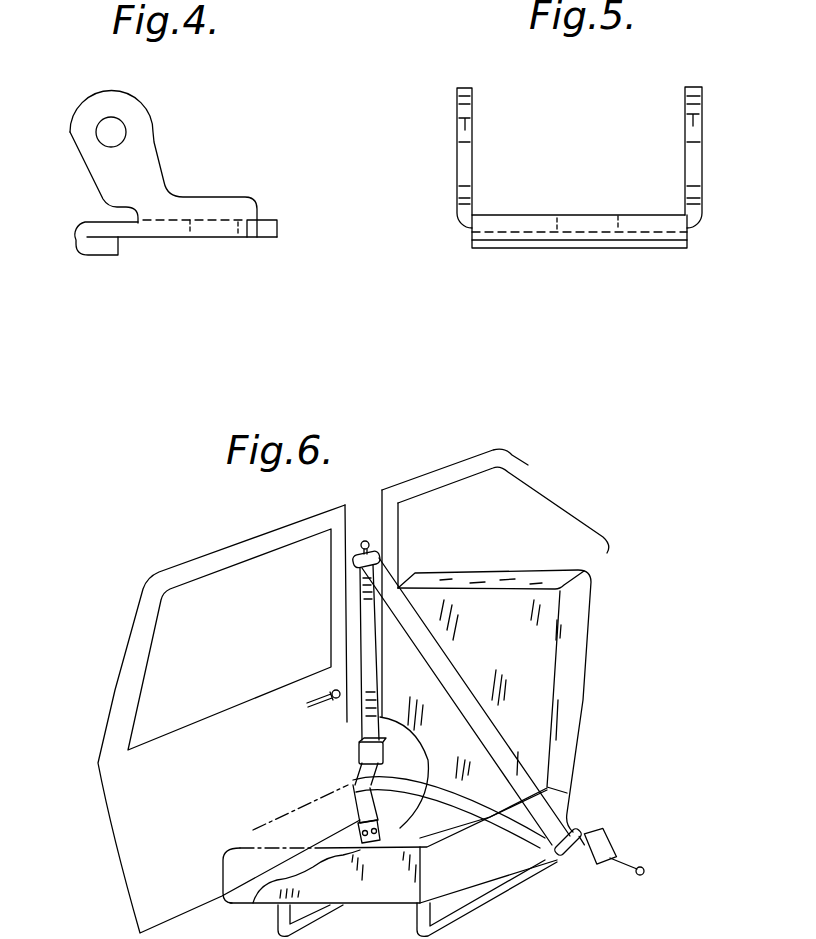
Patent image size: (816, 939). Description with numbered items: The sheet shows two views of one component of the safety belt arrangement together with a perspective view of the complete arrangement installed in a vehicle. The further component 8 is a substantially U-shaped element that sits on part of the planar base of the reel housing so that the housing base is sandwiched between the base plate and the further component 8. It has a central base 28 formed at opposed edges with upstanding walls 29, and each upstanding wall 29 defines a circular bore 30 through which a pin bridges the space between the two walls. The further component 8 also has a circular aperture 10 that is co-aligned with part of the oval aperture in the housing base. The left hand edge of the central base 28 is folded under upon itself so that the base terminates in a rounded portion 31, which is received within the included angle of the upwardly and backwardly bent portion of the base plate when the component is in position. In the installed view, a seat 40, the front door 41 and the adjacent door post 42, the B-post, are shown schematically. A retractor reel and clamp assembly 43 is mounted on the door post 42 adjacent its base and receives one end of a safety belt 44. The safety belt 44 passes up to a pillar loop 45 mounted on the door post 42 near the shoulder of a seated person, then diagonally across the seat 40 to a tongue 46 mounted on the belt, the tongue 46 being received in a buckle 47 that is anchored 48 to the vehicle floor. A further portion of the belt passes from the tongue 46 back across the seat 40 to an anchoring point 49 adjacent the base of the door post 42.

In FIG. 4, the further component 8 is at (163, 184).
In FIG. 5, the further component 8 is at (578, 165).
In FIG. 4, the circular aperture 10 is at (238, 232).
In FIG. 5, the circular aperture 10 is at (557, 223).
In FIG. 4, the central base 28 is at (270, 220).
In FIG. 4, the upstanding walls 29 is at (135, 160).
In FIG. 5, the upstanding walls 29 is at (465, 170).
In FIG. 4, the circular bore 30 is at (101, 133).
In FIG. 5, the circular bore 30 is at (465, 118).
In FIG. 4, the rounded portion 31 is at (76, 240).
In FIG. 5, the rounded portion 31 is at (585, 240).
In FIG. 6, the seat 40 is at (535, 670).
In FIG. 6, the front door 41 is at (215, 588).
In FIG. 6, the door post 42 is at (363, 541).
In FIG. 6, the retractor reel and clamp assembly 43 is at (357, 758).
In FIG. 6, the safety belt 44 is at (372, 707).
In FIG. 6, the pillar loop 45 is at (387, 546).
In FIG. 6, the tongue 46 is at (585, 821).
In FIG. 6, the buckle 47 is at (598, 849).
In FIG. 6, the anchor 48 is at (636, 876).
In FIG. 6, the anchoring point 49 is at (357, 833).